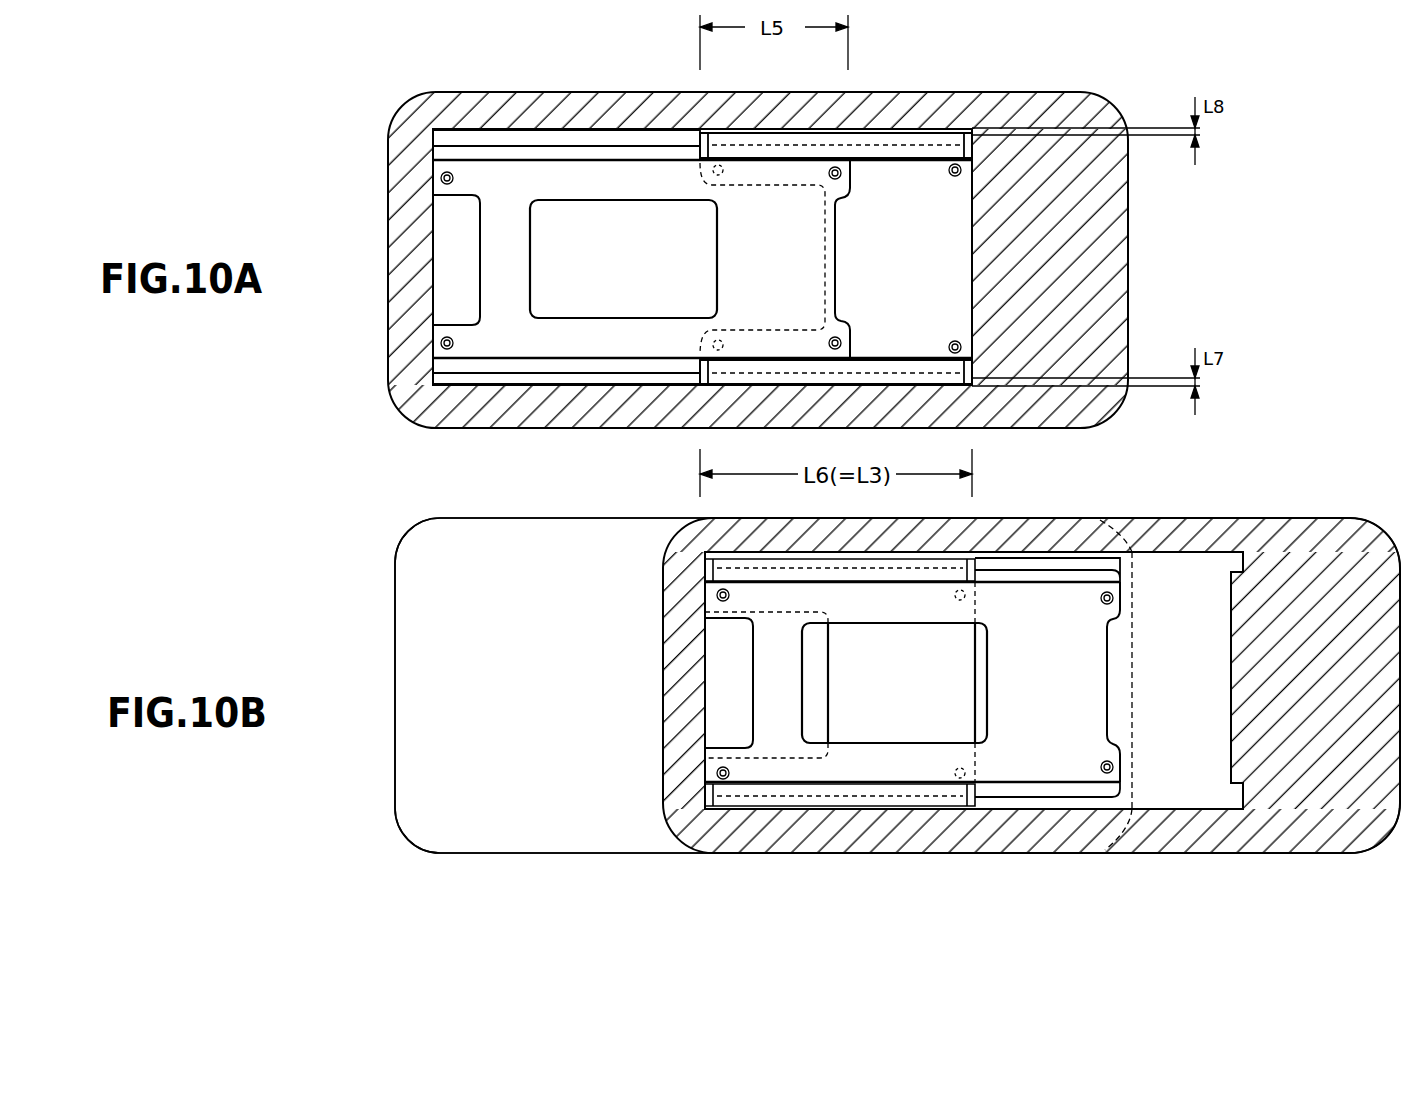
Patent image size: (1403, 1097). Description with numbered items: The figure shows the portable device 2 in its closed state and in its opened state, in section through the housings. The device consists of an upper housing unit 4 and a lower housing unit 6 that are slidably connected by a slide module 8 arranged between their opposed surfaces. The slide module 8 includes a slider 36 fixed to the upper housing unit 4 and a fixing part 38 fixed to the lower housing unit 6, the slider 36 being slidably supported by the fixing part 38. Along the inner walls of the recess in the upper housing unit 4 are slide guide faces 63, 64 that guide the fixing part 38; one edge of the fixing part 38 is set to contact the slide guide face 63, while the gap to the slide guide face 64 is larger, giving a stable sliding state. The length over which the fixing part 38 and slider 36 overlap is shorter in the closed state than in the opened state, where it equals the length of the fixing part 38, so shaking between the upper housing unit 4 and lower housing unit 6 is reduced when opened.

In FIG. 10B, the portable device 2 is at (340, 628).
In FIG. 10A, the upper housing unit 4 is at (388, 318).
In FIG. 10B, the upper housing unit 4 is at (663, 640).
In FIG. 10B, the lower housing unit 6 is at (395, 758).
In FIG. 10A, the slide module 8 is at (702, 194).
In FIG. 10B, the slide module 8 is at (972, 616).
In FIG. 10A, the slider 36 is at (508, 172).
In FIG. 10B, the slider 36 is at (1102, 577).
In FIG. 10A, the fixing part 38 is at (806, 213).
In FIG. 10B, the fixing part 38 is at (928, 577).
In FIG. 10A, the slide guide face 63 is at (935, 380).
In FIG. 10B, the slide guide face 63 is at (1243, 800).
In FIG. 10A, the slide guide face 64 is at (931, 130).
In FIG. 10B, the slide guide face 64 is at (1212, 555).